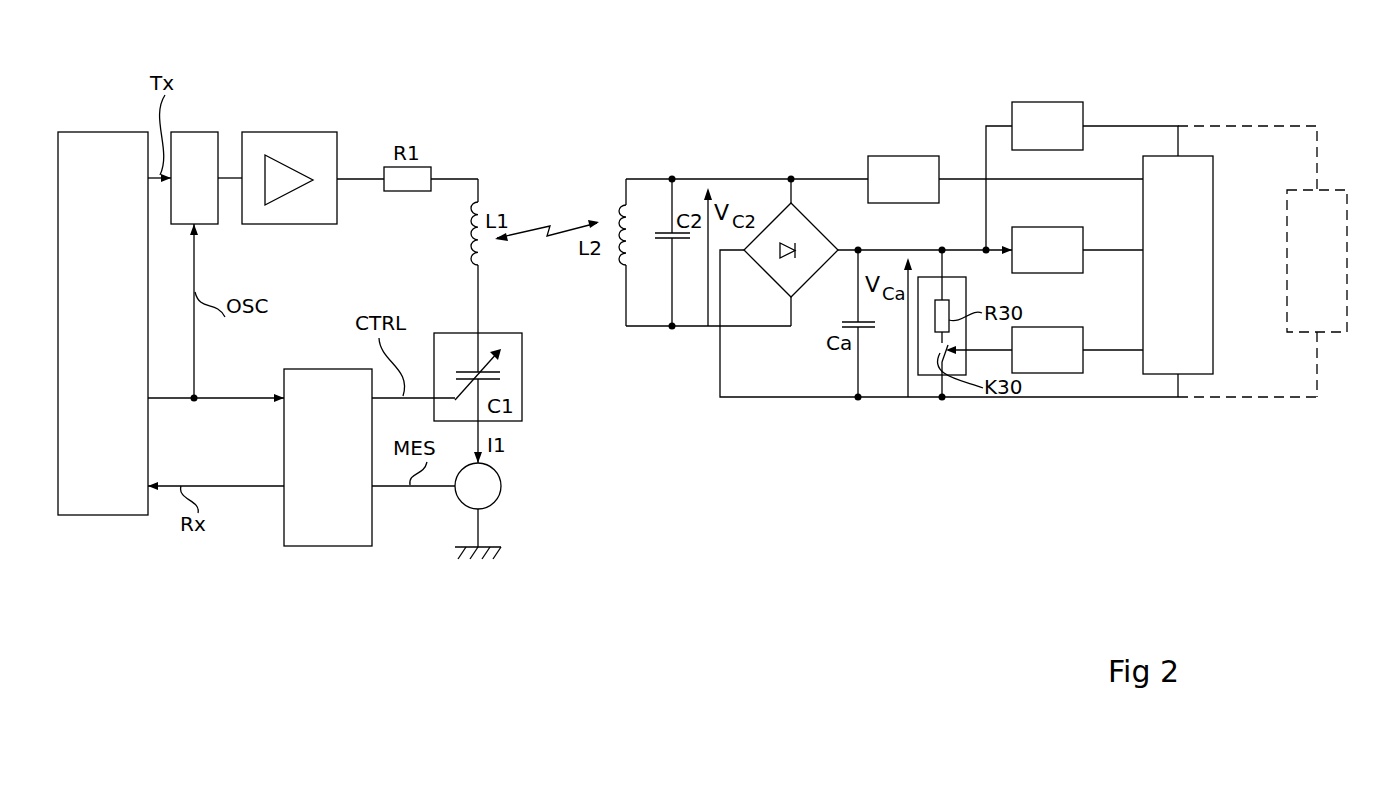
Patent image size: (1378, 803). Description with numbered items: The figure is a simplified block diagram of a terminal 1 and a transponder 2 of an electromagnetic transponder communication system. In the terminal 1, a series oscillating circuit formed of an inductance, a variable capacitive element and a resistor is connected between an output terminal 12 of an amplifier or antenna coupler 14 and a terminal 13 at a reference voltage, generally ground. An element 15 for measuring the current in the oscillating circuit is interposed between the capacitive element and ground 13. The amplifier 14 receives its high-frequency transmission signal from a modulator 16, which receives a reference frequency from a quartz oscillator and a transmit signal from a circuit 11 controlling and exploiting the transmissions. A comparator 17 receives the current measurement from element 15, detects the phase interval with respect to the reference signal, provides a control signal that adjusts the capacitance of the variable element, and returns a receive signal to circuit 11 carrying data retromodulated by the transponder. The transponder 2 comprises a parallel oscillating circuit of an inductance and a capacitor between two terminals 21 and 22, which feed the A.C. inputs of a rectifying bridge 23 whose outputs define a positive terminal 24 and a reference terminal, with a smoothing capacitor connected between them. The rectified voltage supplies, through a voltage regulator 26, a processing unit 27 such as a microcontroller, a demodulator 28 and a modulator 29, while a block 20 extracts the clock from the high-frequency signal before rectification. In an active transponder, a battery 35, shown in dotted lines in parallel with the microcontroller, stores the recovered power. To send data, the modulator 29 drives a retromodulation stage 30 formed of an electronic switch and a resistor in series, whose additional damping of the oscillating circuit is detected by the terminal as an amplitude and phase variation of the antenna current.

The terminal 1 is at (242, 586).
The transponder 2 is at (821, 510).
The circuit for controlling and exploiting the transmissions 11 is at (98, 132).
The output terminal 12 is at (358, 179).
The terminal at a reference voltage 13 is at (478, 530).
The amplifier or antenna coupler 14 is at (290, 132).
The element for measuring the current 15 is at (501, 490).
The modulator 16 is at (193, 132).
The comparator 17 is at (315, 546).
The clock extraction block 20 is at (893, 156).
The first terminal of the oscillating circuit 21 is at (672, 179).
The second terminal of the oscillating circuit 22 is at (672, 326).
The rectifying bridge 23 is at (815, 230).
The positive terminal 24 is at (860, 248).
The voltage regulator 26 is at (1070, 102).
The processing unit 27 is at (1213, 200).
The demodulator 28 is at (1035, 227).
The modulator 29 is at (1035, 327).
The stage of modulation (retromodulation) 30 is at (966, 292).
The battery 35 is at (1335, 190).